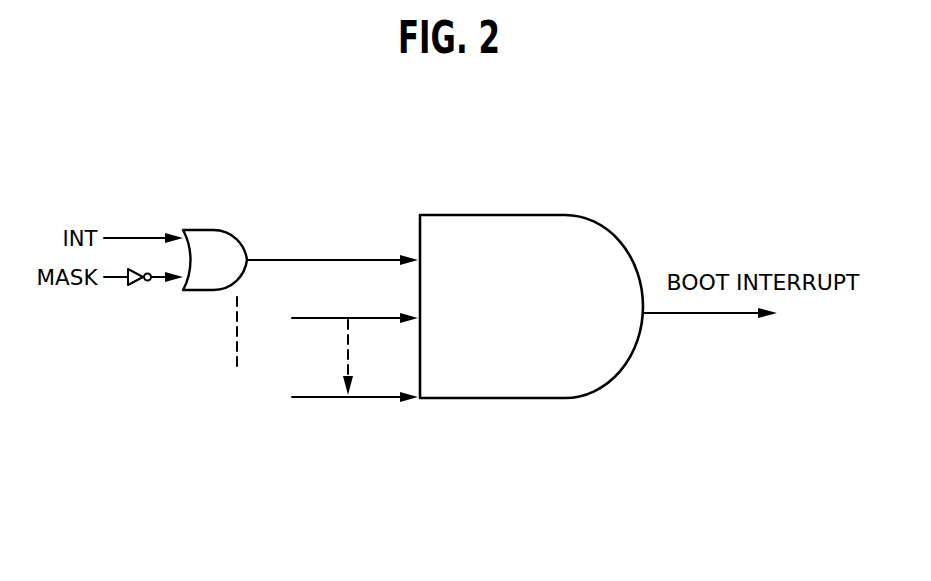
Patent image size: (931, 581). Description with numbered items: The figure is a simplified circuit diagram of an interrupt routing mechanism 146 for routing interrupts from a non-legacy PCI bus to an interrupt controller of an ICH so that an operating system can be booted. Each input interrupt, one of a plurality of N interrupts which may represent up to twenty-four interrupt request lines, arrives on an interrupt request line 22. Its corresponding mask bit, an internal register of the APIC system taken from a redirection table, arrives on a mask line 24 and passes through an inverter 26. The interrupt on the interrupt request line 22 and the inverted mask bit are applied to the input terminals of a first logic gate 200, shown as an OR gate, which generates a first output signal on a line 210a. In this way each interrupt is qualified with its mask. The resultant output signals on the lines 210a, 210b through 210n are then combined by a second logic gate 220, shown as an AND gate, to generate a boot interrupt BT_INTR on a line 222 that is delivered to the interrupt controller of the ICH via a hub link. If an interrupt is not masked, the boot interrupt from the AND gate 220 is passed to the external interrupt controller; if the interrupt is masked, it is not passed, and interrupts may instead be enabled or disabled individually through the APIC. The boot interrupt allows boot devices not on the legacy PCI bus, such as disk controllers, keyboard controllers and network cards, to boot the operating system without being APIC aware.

The interrupt routing mechanism 146 is at (684, 145).
The interrupt request line 22 is at (120, 237).
The mask bit line 24 is at (118, 279).
The inverter 26 is at (146, 286).
The first logic gate 200 is at (208, 229).
The first output signal line 210a is at (272, 259).
The output signal line 210b is at (352, 317).
The nth output signal line 210n is at (334, 398).
The second logic gate 220 is at (593, 217).
The boot interrupt line 222 is at (690, 314).